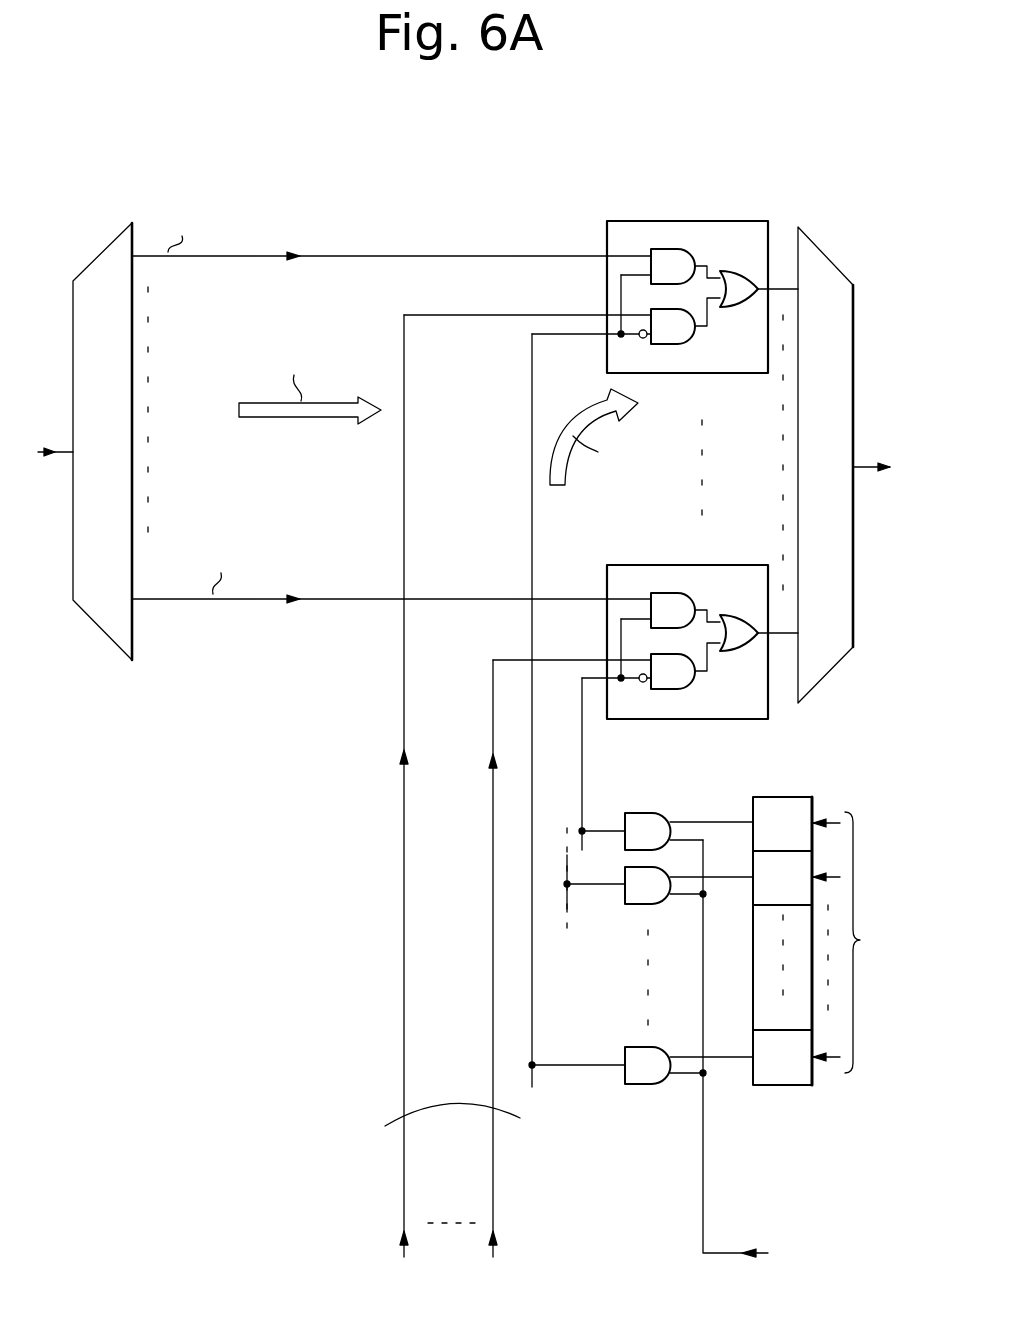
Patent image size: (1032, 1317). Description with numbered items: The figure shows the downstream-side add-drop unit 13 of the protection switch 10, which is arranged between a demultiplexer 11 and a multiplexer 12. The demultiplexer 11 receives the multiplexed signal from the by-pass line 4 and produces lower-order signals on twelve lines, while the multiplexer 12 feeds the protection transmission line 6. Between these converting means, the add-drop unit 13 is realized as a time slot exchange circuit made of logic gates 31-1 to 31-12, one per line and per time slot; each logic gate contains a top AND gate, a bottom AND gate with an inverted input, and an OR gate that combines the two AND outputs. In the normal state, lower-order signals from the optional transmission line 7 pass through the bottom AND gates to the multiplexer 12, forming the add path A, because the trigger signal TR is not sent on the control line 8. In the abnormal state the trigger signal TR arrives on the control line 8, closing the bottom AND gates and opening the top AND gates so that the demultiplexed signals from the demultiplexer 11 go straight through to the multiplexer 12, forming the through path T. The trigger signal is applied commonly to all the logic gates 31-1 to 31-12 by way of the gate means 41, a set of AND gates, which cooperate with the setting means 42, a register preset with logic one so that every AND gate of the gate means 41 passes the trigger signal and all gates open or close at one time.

The protection switch 10 is at (392, 143).
The demultiplexer 11 is at (93, 258).
The multiplexer 12 is at (831, 265).
The add-drop unit 13 is at (483, 229).
The by-pass line 4 is at (57, 450).
The protection transmission line 6 is at (863, 466).
The logic gate 31-1 is at (645, 221).
The logic gate 31-12 is at (641, 565).
The gate means 41 is at (684, 811).
The setting means 42 is at (784, 1088).
The optional transmission line 7 is at (514, 1122).
The control line 8 is at (729, 1252).